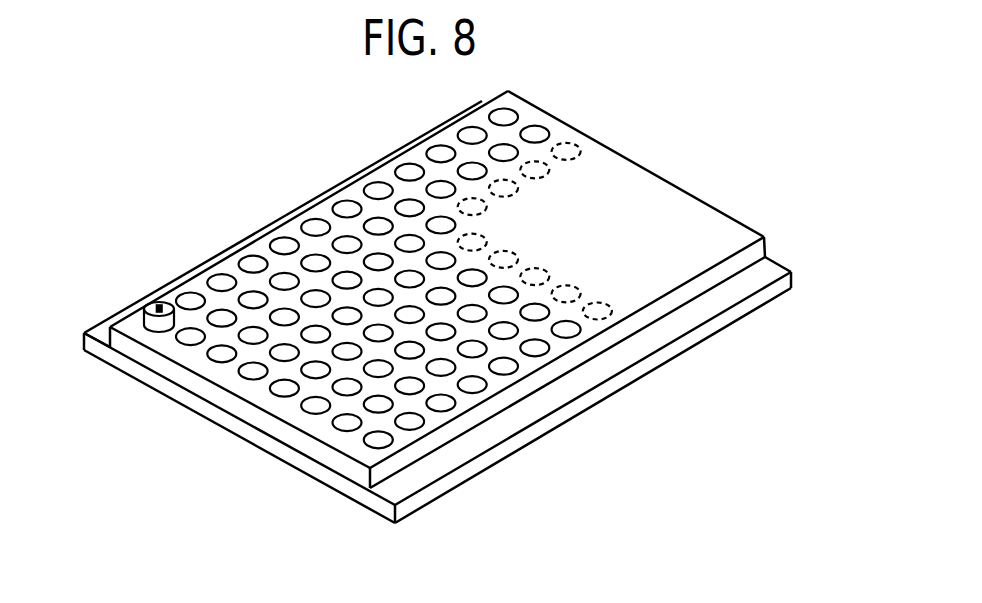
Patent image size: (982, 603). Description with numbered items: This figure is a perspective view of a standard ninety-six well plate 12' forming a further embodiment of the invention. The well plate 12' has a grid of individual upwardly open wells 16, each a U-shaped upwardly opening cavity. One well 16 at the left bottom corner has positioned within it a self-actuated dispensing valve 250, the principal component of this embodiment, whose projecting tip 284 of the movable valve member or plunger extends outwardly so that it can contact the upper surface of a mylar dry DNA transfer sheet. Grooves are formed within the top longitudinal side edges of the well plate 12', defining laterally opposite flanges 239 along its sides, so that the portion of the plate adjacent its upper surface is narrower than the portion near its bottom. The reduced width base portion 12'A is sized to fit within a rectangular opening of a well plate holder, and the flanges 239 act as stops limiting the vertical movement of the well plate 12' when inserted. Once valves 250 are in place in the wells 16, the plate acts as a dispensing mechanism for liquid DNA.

The well plate 12' is at (437, 312).
The reduced width base portion 12'A is at (437, 317).
The wells 16 is at (252, 263).
The flanges 239 is at (100, 334).
The dispensing valve 250 is at (152, 309).
The projecting tip 284 is at (160, 304).